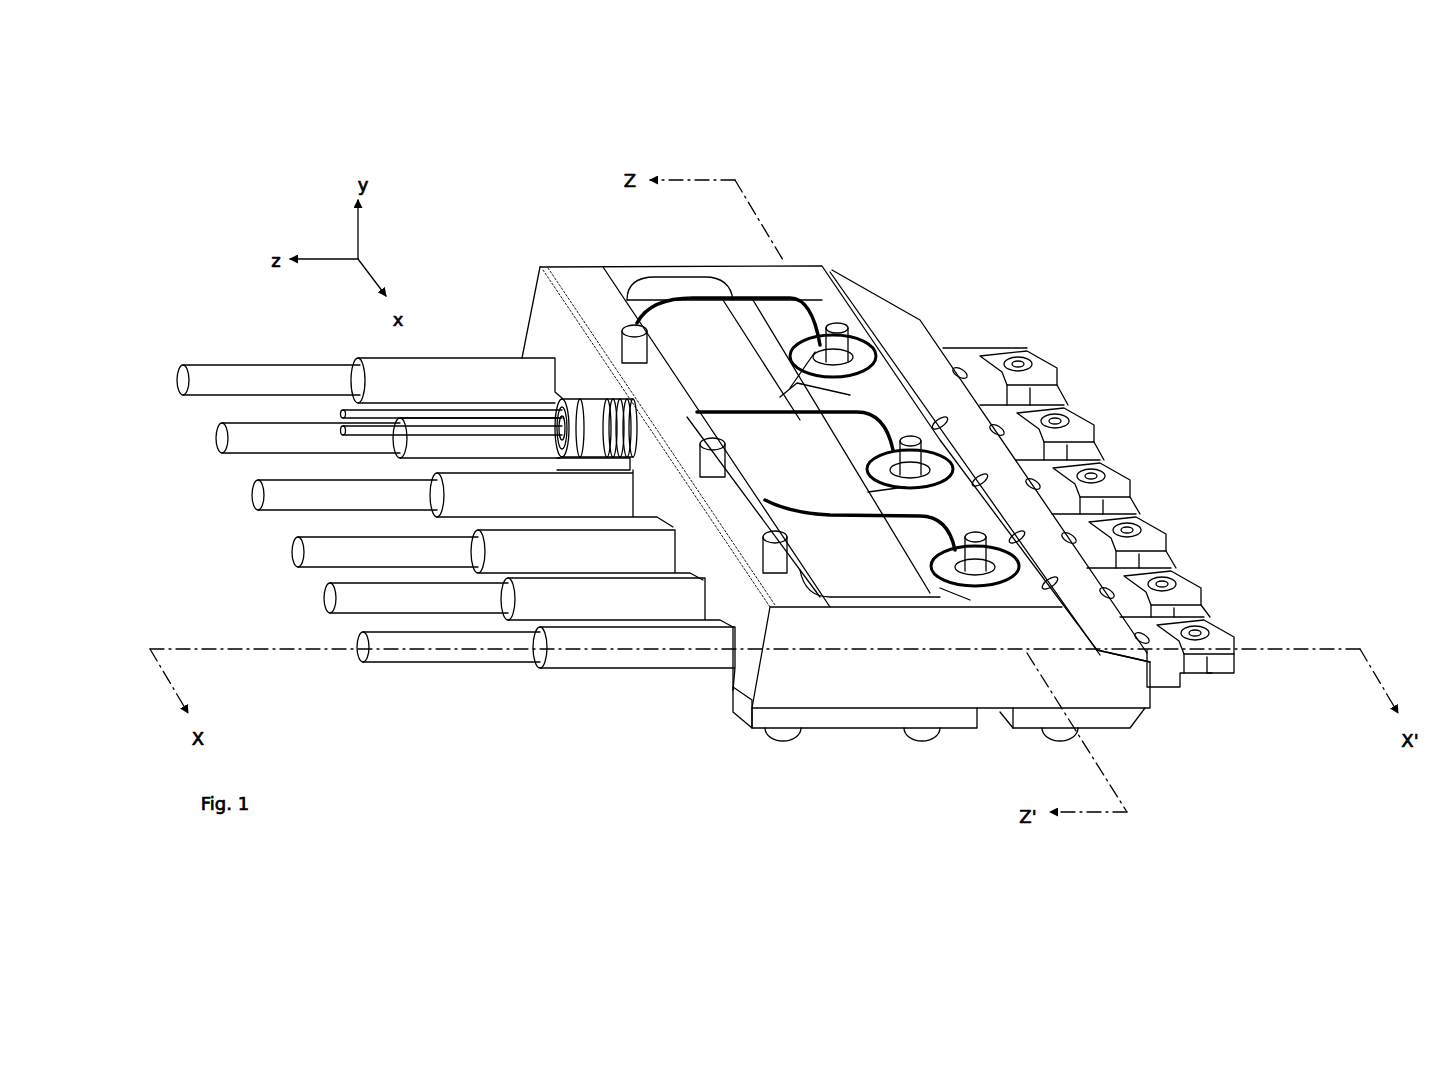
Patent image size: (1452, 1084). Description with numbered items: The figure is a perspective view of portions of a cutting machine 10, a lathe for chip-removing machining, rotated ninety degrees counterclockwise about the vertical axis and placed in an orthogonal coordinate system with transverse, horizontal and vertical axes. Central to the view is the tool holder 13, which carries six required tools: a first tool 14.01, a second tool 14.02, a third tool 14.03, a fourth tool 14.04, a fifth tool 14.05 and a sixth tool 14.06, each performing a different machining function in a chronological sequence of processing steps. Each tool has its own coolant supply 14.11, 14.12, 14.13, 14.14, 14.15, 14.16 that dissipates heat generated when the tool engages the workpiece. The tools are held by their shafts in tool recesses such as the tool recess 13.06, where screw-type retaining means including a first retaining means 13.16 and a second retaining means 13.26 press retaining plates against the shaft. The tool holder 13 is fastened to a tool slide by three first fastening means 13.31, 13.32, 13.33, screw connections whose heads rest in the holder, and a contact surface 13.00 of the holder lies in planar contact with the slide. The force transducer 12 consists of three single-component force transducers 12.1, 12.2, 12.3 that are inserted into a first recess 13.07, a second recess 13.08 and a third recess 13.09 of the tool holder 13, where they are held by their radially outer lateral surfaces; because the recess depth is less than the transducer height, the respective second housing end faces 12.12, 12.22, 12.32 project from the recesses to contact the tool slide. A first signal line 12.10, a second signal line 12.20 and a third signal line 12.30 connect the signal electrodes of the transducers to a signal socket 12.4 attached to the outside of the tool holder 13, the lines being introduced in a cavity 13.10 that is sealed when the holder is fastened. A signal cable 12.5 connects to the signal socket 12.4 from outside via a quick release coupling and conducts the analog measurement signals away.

The cutting machine 10 is at (590, 237).
The force transducer 12 is at (862, 288).
The tool holder 13 is at (545, 295).
The first single-component force transducer 12.1 is at (795, 352).
The second single-component force transducer 12.2 is at (868, 470).
The third single-component force transducer 12.3 is at (935, 575).
The signal socket 12.4 is at (627, 457).
The signal cable 12.5 is at (590, 387).
The first signal line 12.10 is at (803, 291).
The second housing end face 12.12 is at (790, 388).
The second signal line 12.20 is at (812, 420).
The second housing end face 12.22 is at (868, 492).
The third signal line 12.30 is at (880, 518).
The second housing end face 12.32 is at (965, 585).
The contact surface 13.00 is at (670, 403).
The tool recess 13.06 is at (726, 678).
The first recess 13.07 is at (912, 382).
The second recess 13.08 is at (1000, 550).
The third recess 13.09 is at (1050, 598).
The cavity 13.10 is at (655, 291).
The first retaining means 13.16 is at (1035, 720).
The second retaining means 13.26 is at (887, 720).
The first fastening means 13.31 is at (870, 372).
The first fastening means 13.32 is at (940, 470).
The first fastening means 13.33 is at (980, 585).
The first tool 14.01 is at (1060, 383).
The second tool 14.02 is at (1097, 440).
The third tool 14.03 is at (1130, 495).
The fourth tool 14.04 is at (1166, 551).
The fifth tool 14.05 is at (1201, 604).
The sixth tool 14.06 is at (1235, 652).
The coolant supply 14.11 is at (205, 383).
The coolant supply 14.12 is at (246, 437).
The coolant supply 14.13 is at (286, 495).
The coolant supply 14.14 is at (322, 553).
The coolant supply 14.15 is at (358, 602).
The coolant supply 14.16 is at (482, 662).